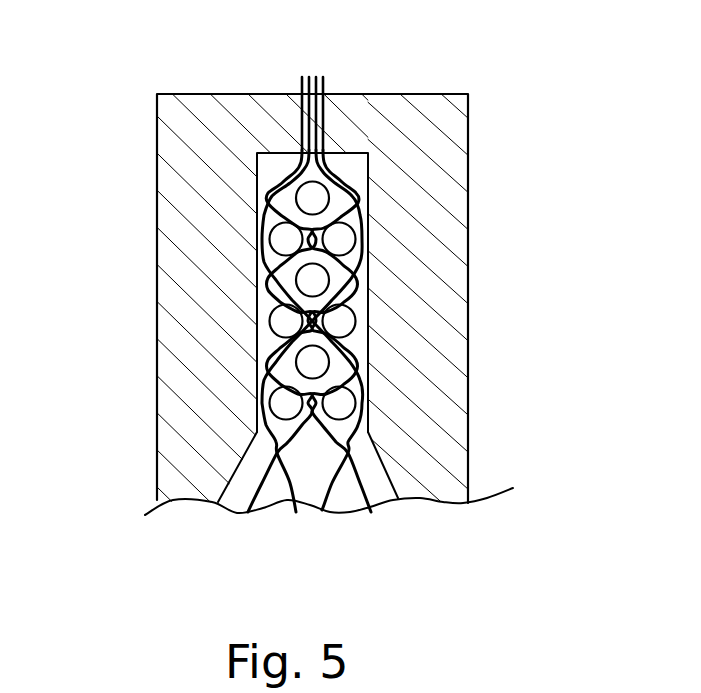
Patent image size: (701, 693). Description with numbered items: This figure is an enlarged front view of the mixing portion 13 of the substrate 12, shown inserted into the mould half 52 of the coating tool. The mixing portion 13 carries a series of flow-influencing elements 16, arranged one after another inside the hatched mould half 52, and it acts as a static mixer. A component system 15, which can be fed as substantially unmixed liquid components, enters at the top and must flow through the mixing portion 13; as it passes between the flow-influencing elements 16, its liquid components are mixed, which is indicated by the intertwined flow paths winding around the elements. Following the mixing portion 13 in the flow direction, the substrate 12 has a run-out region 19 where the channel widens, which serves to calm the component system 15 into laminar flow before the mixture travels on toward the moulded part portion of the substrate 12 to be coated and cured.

The substrate 12 is at (376, 483).
The mixing portion 13 is at (229, 281).
The component system 15 is at (314, 104).
The flow-influencing elements 16 is at (312, 198).
The run-out region 19 is at (218, 470).
The mould half 52 is at (428, 306).